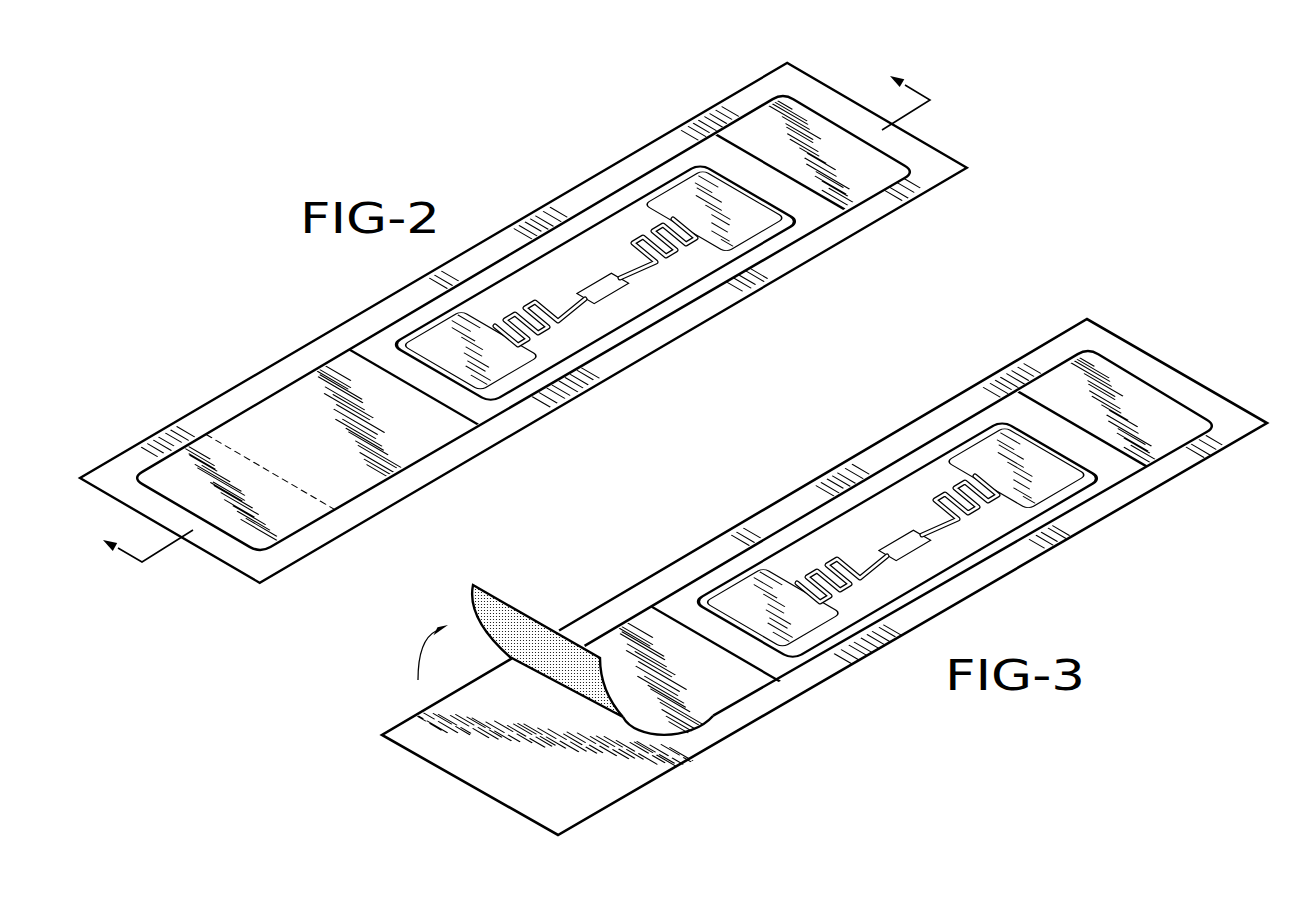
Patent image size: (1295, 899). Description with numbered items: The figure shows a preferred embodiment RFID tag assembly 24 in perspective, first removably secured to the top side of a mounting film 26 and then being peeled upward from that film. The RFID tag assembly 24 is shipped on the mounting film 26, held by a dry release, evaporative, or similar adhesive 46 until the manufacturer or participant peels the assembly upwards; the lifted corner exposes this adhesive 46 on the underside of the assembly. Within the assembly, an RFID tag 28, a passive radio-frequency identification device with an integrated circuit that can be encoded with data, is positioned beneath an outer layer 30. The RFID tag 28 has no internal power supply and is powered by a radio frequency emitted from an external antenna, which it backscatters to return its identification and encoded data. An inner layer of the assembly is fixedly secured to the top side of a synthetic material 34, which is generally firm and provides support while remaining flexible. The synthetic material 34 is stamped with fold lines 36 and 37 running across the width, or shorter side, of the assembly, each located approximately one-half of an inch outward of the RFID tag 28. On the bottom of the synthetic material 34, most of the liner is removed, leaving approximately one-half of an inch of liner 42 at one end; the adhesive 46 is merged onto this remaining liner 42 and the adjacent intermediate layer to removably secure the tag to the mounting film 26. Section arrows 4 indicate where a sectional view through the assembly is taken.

In FIG. 2, the section line 4- 4 is at (507, 310).
In FIG. 2, the RFID tag assembly 24 is at (297, 377).
In FIG. 3, the RFID tag assembly 24 is at (620, 617).
In FIG. 2, the mounting film 26 is at (400, 303).
In FIG. 3, the mounting film 26 is at (493, 770).
In FIG. 2, the RFID tag 28 is at (690, 190).
In FIG. 3, the RFID tag 28 is at (992, 447).
In FIG. 2, the outer layer 30 is at (600, 233).
In FIG. 3, the outer layer 30 is at (902, 490).
In FIG. 2, the synthetic material 34 is at (258, 427).
In FIG. 3, the synthetic material 34 is at (1137, 398).
In FIG. 2, the fold line 36 is at (373, 367).
In FIG. 3, the fold line 36 is at (670, 623).
In FIG. 2, the fold line 37 is at (743, 150).
In FIG. 3, the fold line 37 is at (1042, 406).
In FIG. 2, the liner 42 is at (180, 473).
In FIG. 3, the dry release adhesive 46 is at (478, 611).